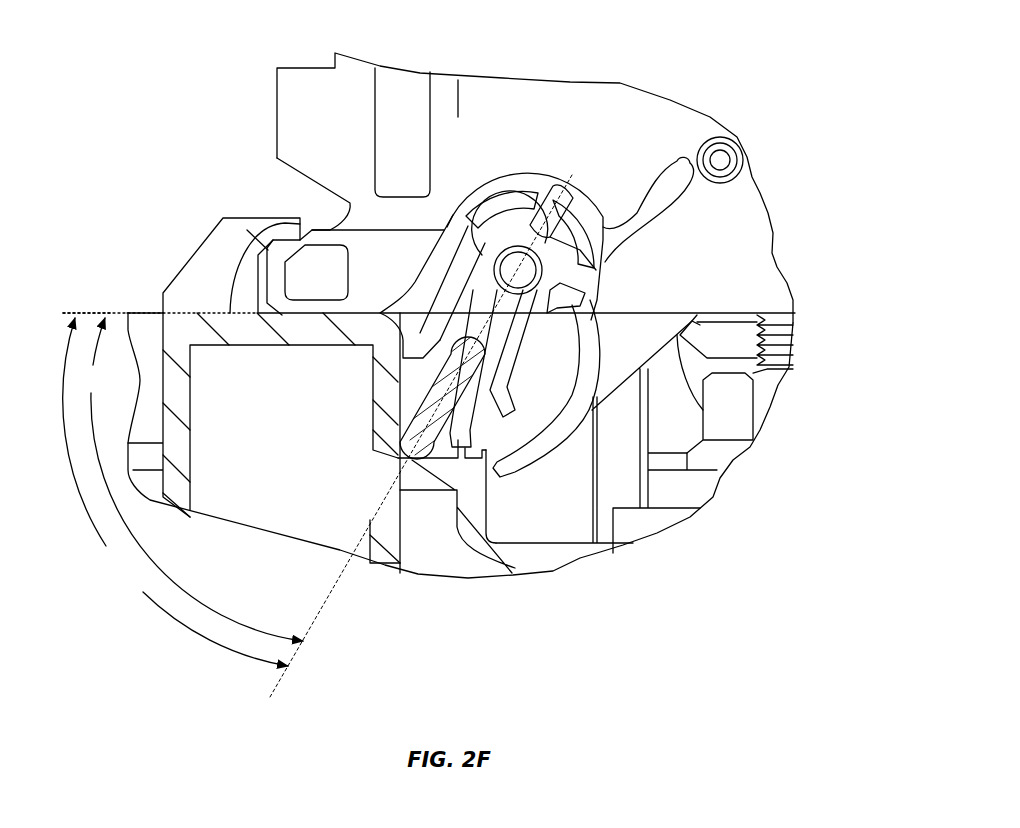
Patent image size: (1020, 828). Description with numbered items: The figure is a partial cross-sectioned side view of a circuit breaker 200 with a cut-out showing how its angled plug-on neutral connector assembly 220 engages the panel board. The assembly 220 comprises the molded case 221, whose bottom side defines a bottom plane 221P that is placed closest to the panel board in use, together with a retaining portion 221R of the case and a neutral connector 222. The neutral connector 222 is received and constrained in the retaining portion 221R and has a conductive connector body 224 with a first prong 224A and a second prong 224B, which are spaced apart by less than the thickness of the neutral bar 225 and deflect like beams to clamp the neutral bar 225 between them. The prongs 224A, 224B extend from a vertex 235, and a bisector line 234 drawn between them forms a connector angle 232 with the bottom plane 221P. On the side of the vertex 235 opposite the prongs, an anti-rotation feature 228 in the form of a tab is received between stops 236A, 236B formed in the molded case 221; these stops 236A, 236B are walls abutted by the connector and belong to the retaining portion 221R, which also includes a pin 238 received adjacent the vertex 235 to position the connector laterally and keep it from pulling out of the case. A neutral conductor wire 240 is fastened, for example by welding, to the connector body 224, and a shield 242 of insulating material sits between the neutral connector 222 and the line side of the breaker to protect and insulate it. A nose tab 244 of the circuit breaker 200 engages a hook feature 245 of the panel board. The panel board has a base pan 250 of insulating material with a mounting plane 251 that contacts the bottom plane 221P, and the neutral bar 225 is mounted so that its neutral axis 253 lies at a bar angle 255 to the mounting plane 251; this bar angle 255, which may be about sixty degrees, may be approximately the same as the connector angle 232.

The circuit breaker 200 is at (260, 78).
The angled plug-on neutral connector assembly 220 is at (598, 161).
The molded case 221 is at (275, 118).
The bottom plane 221P is at (75, 313).
The retaining portion 221R is at (496, 195).
The neutral connector 222 is at (450, 252).
The connector body 224 is at (530, 340).
The first prong 224A is at (425, 370).
The second prong 224B is at (483, 475).
The neutral bar 225 is at (418, 410).
The anti-rotation feature 228 is at (571, 176).
The connector angle 232 is at (192, 479).
The bisector line 234 is at (340, 579).
The vertex 235 is at (597, 257).
The stop 236A is at (522, 200).
The stop 236B is at (578, 213).
The pin 238 is at (490, 263).
The neutral conductor wire 240 is at (587, 292).
The shield 242 is at (573, 433).
The nose tab 244 is at (257, 258).
The hook feature 245 is at (277, 213).
The base pan 250 is at (557, 569).
The mounting plane 251 is at (117, 313).
The neutral axis 253 is at (412, 437).
The bar angle 255 is at (175, 492).